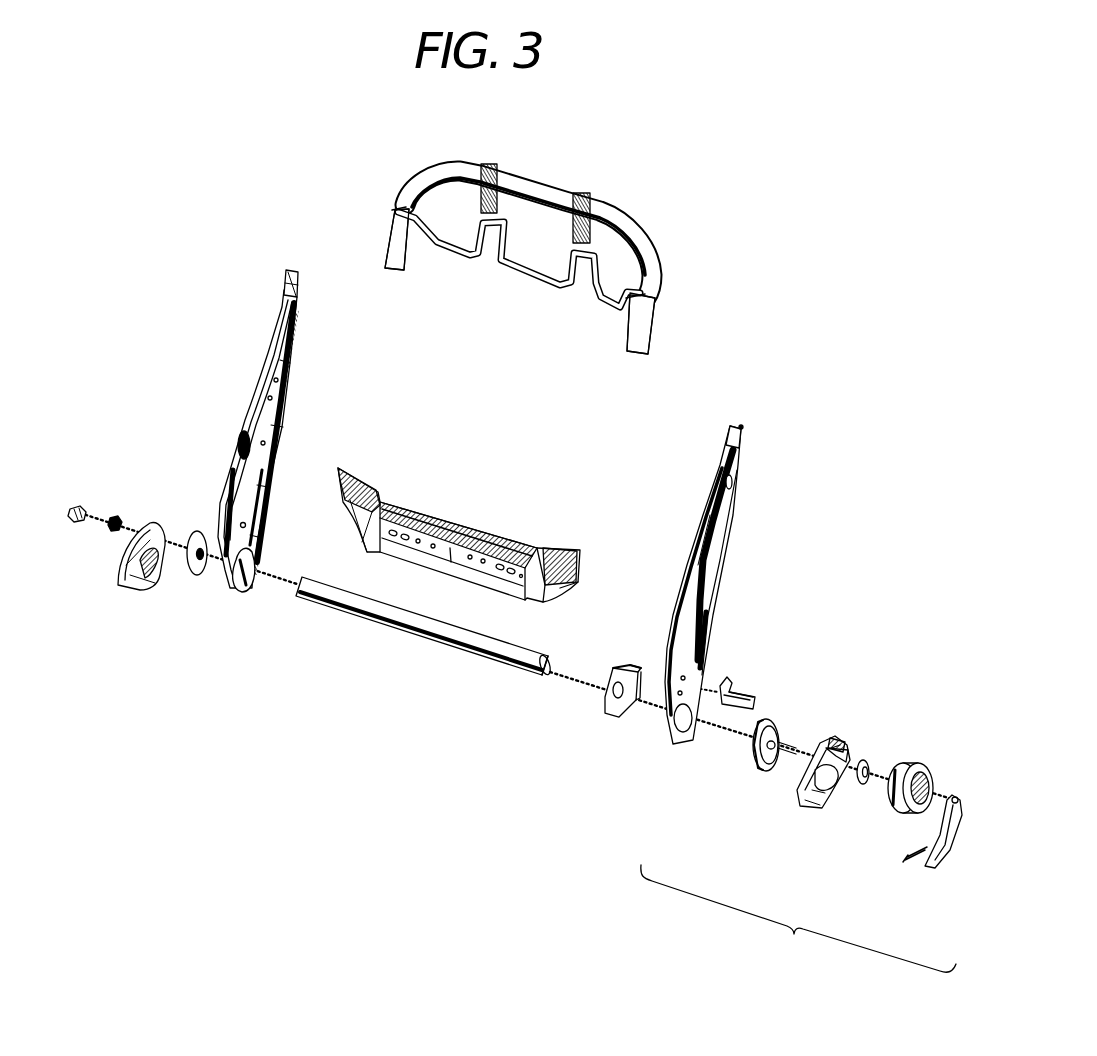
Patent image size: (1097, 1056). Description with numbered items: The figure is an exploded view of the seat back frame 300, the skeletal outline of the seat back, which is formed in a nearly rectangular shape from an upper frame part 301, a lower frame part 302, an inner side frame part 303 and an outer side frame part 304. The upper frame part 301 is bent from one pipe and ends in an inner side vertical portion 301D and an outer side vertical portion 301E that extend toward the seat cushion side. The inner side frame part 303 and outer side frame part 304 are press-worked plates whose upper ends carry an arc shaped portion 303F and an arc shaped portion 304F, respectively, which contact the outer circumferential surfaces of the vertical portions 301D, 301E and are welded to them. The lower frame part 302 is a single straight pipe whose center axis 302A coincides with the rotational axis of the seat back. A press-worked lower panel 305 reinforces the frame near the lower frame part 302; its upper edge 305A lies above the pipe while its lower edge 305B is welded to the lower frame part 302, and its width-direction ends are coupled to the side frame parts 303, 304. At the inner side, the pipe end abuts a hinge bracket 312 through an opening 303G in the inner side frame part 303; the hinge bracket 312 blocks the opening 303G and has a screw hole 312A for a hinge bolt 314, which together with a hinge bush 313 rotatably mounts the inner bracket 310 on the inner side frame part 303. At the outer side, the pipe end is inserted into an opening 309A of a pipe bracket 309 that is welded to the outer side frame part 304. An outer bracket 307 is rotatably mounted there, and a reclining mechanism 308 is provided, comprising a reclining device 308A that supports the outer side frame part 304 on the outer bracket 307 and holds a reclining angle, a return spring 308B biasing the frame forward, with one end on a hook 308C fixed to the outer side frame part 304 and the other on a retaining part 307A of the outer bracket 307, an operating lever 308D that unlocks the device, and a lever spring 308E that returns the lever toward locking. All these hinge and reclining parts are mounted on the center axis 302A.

The seat back frame 300 is at (764, 276).
The upper frame part 301 is at (535, 182).
The inner side vertical portion 301D is at (392, 237).
The outer side vertical portion 301E is at (652, 327).
The lower frame part 302 is at (399, 630).
The center axis of the lower frame part 302A is at (579, 680).
The inner side frame part 303 is at (242, 418).
The arc shaped portion 303F is at (281, 296).
The opening 303G is at (245, 585).
The outer side frame part 304 is at (722, 582).
The arc shaped portion 304F is at (746, 430).
The lower panel 305 is at (547, 540).
The upper edge 305A is at (446, 515).
The lower edge 305B is at (434, 566).
The outer bracket 307 is at (833, 739).
The retaining part 307A is at (849, 750).
The reclining mechanism 308 is at (798, 918).
The reclining device 308A is at (763, 768).
The return spring 308B is at (905, 815).
The hook 308C is at (735, 712).
The operating lever 308D is at (947, 870).
The lever spring 308E is at (862, 786).
The pipe bracket 309 is at (609, 703).
The opening 309A is at (626, 702).
The inner bracket 310 is at (126, 578).
The hinge bracket 312 is at (197, 572).
The screw hole 312A is at (199, 550).
The hinge bush 313 is at (115, 518).
The hinge bolt 314 is at (76, 522).